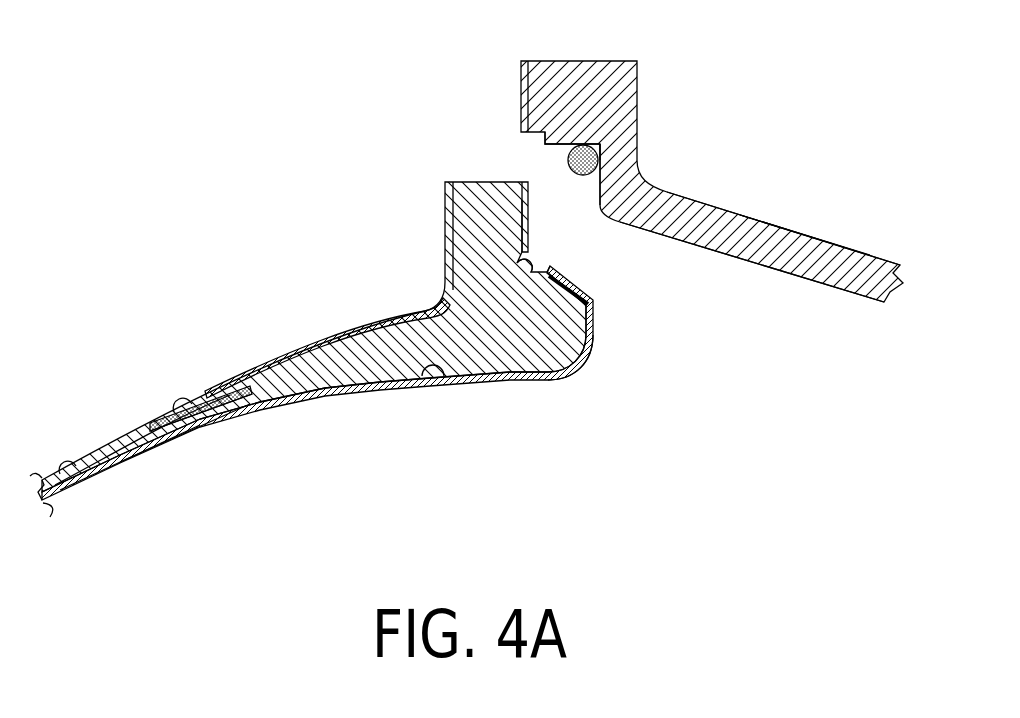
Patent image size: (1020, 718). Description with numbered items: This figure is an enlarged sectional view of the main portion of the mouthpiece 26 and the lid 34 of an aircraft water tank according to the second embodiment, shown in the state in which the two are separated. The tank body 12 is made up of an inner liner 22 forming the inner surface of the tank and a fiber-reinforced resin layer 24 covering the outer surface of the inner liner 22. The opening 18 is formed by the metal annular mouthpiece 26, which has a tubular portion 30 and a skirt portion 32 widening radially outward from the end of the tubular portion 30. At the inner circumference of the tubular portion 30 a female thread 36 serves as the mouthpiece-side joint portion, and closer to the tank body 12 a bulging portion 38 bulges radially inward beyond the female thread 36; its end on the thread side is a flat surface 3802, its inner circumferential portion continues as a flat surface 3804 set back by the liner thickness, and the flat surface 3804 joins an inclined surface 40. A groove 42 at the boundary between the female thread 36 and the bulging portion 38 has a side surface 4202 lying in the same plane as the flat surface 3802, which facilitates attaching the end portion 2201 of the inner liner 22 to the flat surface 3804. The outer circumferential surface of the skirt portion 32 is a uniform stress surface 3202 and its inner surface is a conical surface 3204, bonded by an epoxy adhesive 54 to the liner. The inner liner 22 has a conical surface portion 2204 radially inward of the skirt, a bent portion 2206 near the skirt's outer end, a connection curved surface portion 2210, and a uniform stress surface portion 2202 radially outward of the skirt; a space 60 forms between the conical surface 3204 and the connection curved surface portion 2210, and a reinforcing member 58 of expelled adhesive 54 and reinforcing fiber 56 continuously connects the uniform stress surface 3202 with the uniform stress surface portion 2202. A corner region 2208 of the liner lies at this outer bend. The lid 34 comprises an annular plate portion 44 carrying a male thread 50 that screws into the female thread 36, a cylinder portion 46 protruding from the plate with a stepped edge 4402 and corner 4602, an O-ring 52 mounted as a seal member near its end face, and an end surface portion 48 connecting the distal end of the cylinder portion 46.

The tank body 12 is at (136, 403).
The opening 18 is at (784, 366).
The inner liner 22 is at (150, 443).
The fiber-reinforced resin layer 24 is at (187, 400).
The mouthpiece 26 is at (468, 182).
The tubular portion 30 is at (477, 247).
The skirt portion 32 is at (373, 358).
The lid 34 is at (780, 228).
The female thread 36 is at (530, 205).
The bulging portion 38 is at (553, 323).
The inclined surface 40 is at (592, 285).
The groove 42 is at (512, 247).
The annular plate portion 44 is at (573, 90).
The cylinder portion 46 is at (628, 165).
The end surface portion 48 is at (833, 257).
The male thread 50 is at (521, 83).
The O-ring 52 is at (583, 145).
The adhesive 54 is at (233, 387).
The reinforcing fiber 56 is at (212, 390).
The reinforcing member 58 is at (240, 413).
The space 60 is at (265, 407).
The end portion of the inner liner 2201 is at (552, 266).
The uniform stress surface portion 2202 is at (88, 470).
The conical surface portion 2204 is at (448, 377).
The bent portion 2206 is at (290, 400).
The outer member corner 2208 is at (600, 345).
The connection curved surface portion 2210 is at (205, 425).
The uniform stress surface 3202 is at (343, 333).
The conical surface 3204 is at (390, 390).
The flat surface 3802 is at (540, 267).
The flat surface 3804 is at (566, 360).
The side surface 4202 is at (538, 267).
The block step 4402 is at (548, 150).
The wall corner 4602 is at (602, 152).